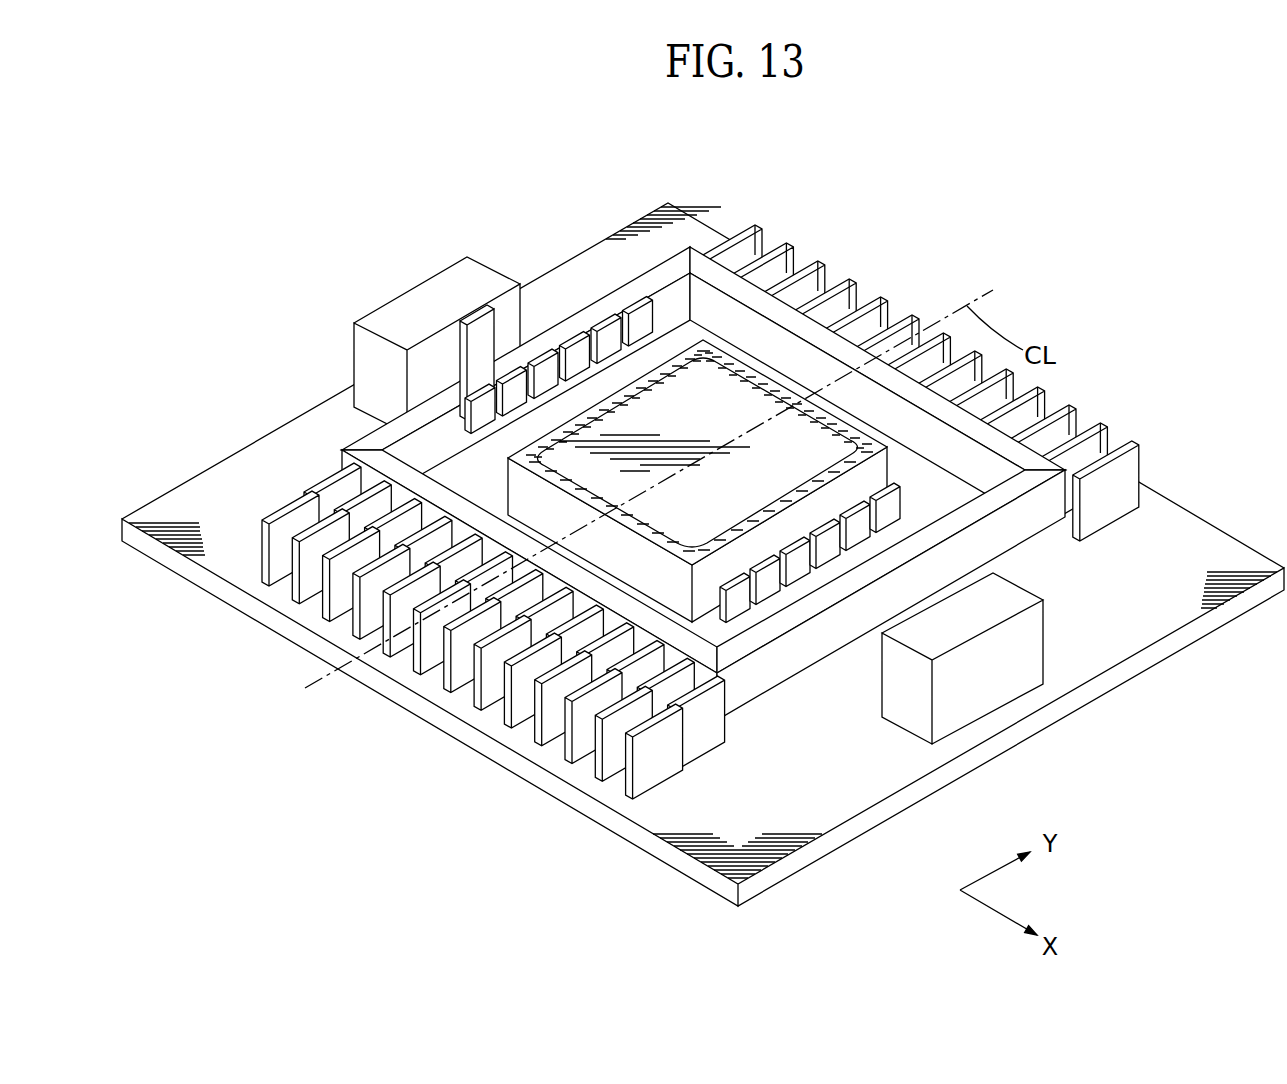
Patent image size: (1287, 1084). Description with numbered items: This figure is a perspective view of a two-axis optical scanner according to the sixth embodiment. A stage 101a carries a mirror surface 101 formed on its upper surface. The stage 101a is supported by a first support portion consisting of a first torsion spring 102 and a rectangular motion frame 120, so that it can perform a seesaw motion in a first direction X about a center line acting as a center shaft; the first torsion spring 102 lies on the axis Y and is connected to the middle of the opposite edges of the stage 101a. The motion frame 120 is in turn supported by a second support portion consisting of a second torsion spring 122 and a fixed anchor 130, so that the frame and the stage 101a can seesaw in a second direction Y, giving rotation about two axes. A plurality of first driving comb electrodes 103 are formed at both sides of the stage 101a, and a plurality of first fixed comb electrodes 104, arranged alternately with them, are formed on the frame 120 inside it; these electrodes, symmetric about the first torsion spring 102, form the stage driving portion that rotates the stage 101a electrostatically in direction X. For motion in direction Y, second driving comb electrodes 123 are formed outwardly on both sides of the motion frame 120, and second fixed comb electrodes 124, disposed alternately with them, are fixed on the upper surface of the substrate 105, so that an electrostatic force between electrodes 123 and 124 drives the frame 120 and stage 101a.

The mirror surface 101 is at (718, 380).
The stage 101a is at (640, 572).
The first torsion spring 102 is at (840, 375).
The first driving comb electrodes 103 is at (610, 365).
The first fixed comb electrodes 104 is at (637, 333).
The substrate 105 is at (1165, 535).
The rectangular motion frame 120 is at (667, 452).
The second torsion spring 122 is at (500, 343).
The second driving comb electrodes 123 is at (682, 690).
The second fixed comb electrodes 124 is at (650, 772).
The fixed anchor 130 is at (476, 290).